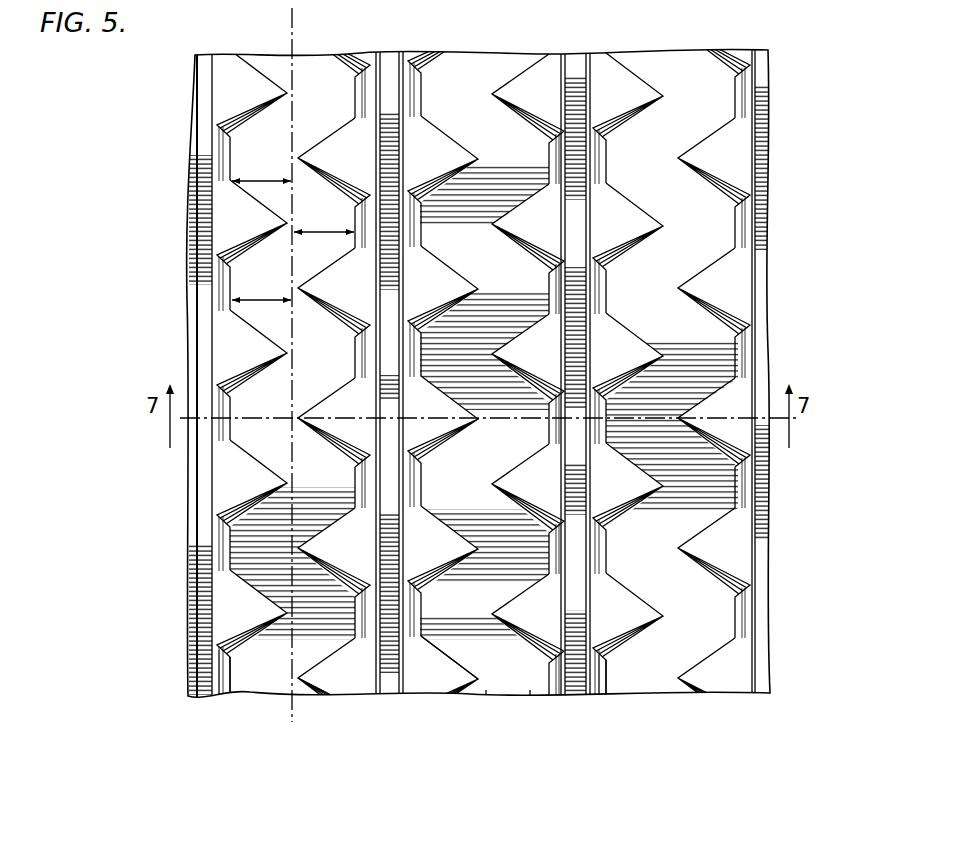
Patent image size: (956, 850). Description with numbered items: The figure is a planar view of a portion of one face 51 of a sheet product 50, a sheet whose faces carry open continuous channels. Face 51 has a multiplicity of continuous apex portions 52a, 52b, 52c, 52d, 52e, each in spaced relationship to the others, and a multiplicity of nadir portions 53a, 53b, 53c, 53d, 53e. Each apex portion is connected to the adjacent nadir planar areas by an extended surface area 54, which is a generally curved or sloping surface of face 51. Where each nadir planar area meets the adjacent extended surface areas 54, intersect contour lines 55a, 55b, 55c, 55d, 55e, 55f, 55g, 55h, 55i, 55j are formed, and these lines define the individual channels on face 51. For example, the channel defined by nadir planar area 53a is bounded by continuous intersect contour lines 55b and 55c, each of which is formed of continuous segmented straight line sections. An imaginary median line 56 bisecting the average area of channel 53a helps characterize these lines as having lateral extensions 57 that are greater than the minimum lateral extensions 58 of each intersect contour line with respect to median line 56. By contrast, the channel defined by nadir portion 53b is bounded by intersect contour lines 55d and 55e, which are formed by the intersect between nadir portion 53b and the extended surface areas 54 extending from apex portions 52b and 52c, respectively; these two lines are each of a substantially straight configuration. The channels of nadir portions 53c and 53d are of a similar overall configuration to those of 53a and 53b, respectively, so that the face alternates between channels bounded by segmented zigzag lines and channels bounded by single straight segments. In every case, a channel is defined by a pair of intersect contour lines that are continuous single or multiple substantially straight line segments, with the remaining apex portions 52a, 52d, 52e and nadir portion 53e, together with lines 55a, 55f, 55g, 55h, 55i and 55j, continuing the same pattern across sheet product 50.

The sheet product 50 is at (207, 41).
The face 51 is at (186, 240).
The apex portion 52a is at (225, 700).
The apex portion 52b is at (371, 670).
The apex portion 52c is at (412, 668).
The apex portion 52d is at (558, 670).
The apex portion 52e is at (600, 666).
The nadir portion 53a is at (290, 675).
The nadir portion 53b is at (390, 602).
The nadir portion 53c is at (485, 646).
The nadir portion 53d is at (583, 597).
The nadir portion 53e is at (713, 646).
The extended surface area 54 is at (312, 156).
The intersect contour line 55a is at (217, 673).
The intersect contour line 55b is at (238, 688).
The intersect contour line 55c is at (320, 693).
The intersect contour line 55d is at (400, 684).
The intersect contour line 55e is at (450, 660).
The intersect contour line 55f is at (486, 694).
The intersect contour line 55g is at (530, 694).
The intersect contour line 55h is at (575, 694).
The intersect contour line 55i is at (600, 694).
The intersect contour line 55j is at (613, 678).
The median line 56 is at (293, 30).
The lateral extension 57 is at (289, 180).
The minimum lateral extension 58 is at (300, 416).